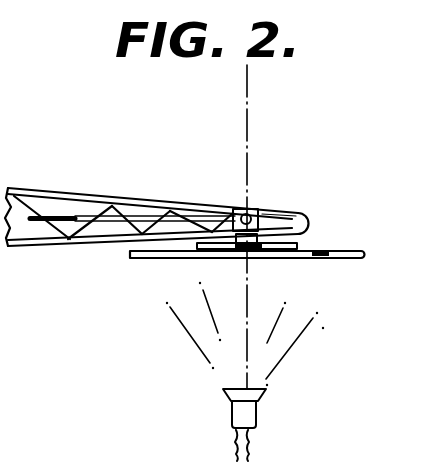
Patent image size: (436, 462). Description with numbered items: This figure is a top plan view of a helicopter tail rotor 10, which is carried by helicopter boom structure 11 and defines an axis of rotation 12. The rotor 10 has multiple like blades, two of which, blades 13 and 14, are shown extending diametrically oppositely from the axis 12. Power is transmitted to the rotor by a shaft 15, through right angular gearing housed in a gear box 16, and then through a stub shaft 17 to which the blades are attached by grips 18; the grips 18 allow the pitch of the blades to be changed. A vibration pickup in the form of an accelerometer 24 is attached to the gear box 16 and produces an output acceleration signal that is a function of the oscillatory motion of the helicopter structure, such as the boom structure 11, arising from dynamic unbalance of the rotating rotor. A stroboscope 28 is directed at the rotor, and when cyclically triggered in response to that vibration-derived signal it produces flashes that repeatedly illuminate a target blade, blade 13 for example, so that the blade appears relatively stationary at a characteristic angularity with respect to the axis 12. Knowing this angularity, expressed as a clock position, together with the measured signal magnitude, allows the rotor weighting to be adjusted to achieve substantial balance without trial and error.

The tail rotor 10 is at (370, 264).
The helicopter boom structure 11 is at (113, 190).
The axis of rotation 12 is at (248, 109).
The blade 13 is at (140, 258).
The blade 14 is at (302, 258).
The shaft 15 is at (66, 237).
The gear box 16 is at (276, 213).
The stub shaft 17 is at (240, 250).
The grips 18 is at (293, 244).
The accelerometer 24 is at (233, 210).
The stroboscope 28 is at (245, 413).